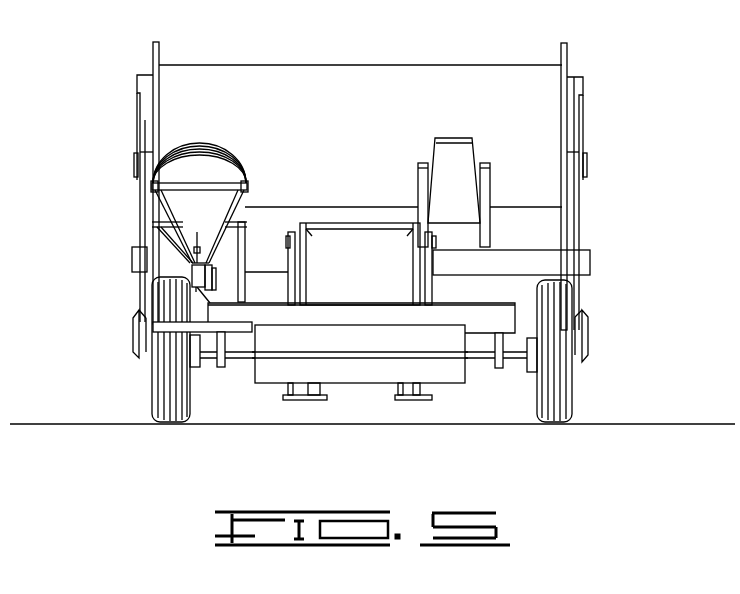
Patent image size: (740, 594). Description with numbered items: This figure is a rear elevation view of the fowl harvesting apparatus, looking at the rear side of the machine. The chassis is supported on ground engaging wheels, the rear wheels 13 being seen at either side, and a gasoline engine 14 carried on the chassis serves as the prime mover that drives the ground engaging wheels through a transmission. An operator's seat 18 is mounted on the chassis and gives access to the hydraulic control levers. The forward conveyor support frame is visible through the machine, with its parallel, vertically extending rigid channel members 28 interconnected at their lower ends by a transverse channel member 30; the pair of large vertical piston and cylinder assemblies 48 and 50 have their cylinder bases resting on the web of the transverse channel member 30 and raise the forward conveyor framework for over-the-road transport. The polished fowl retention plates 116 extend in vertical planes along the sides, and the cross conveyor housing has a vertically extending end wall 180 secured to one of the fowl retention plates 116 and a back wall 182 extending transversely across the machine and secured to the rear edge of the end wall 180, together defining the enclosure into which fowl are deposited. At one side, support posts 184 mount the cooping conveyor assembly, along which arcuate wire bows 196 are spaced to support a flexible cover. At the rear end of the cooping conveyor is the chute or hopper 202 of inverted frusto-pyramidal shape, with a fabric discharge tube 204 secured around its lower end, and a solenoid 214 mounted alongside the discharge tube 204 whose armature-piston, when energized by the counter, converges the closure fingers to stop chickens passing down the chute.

The rear wheels 13 is at (184, 406).
The gasoline engine 14 is at (367, 264).
The operator's seat 18 is at (463, 165).
The channel members 28 is at (289, 285).
The transverse channel member 30 is at (353, 404).
The piston and cylinder assembly 48 is at (286, 400).
The piston and cylinder assembly 50 is at (434, 395).
The fowl retention plate 116 is at (133, 327).
The end wall 180 is at (565, 58).
The back wall 182 is at (366, 128).
The support posts 184 is at (241, 255).
The arcuate wire bows 196 is at (222, 148).
The chute or hopper 202 is at (214, 226).
The discharge tube 204 is at (190, 271).
The solenoid 214 is at (196, 279).